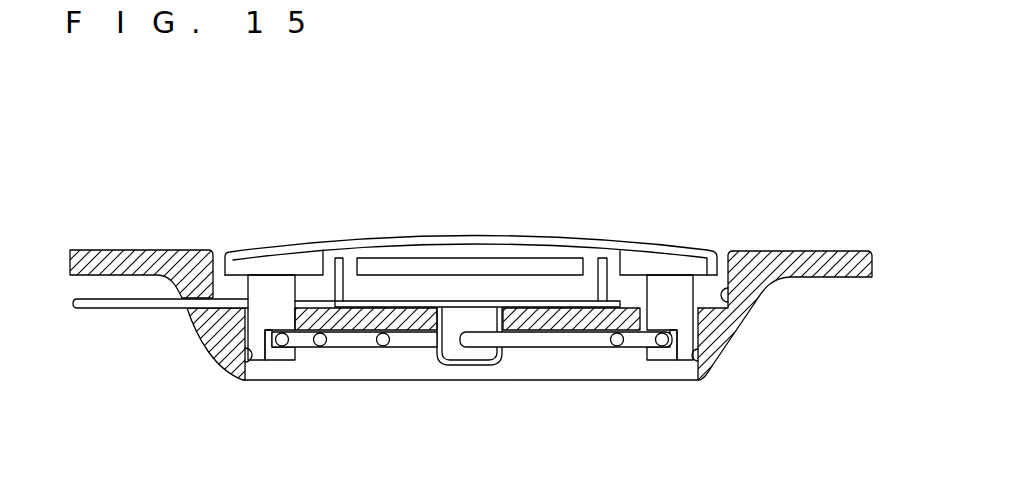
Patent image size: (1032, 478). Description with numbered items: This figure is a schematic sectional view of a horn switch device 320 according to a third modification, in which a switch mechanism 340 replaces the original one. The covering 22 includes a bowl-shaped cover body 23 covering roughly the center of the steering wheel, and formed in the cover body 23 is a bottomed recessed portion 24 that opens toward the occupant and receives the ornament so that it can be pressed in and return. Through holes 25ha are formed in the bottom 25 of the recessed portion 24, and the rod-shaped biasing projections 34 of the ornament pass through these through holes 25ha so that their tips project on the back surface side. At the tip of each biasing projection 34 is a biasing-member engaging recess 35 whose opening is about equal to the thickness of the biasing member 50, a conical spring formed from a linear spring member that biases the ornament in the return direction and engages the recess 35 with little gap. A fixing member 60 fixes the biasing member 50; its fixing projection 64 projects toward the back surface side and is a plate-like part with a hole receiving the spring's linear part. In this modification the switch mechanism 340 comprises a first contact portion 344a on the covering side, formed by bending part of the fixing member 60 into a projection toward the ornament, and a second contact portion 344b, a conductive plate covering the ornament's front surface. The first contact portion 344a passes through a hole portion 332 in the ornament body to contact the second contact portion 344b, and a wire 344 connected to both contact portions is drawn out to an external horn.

The horn switch device 320 is at (496, 206).
The switch mechanism 340 is at (496, 214).
The first contact portion 344a is at (323, 262).
The second contact portion 344b is at (622, 238).
The wire 344 is at (102, 310).
The hole portion 332 is at (348, 247).
The fixing member 60 is at (477, 245).
The covering 22 is at (507, 327).
The cover body 23 is at (808, 270).
The recessed portion 24 is at (732, 302).
The bottom 25 is at (702, 381).
The through holes 25ha is at (240, 377).
The biasing projection 34 is at (258, 362).
The biasing-member engaging recess 35 is at (283, 362).
The biasing member 50 is at (567, 350).
The fixing projection 64 is at (468, 367).